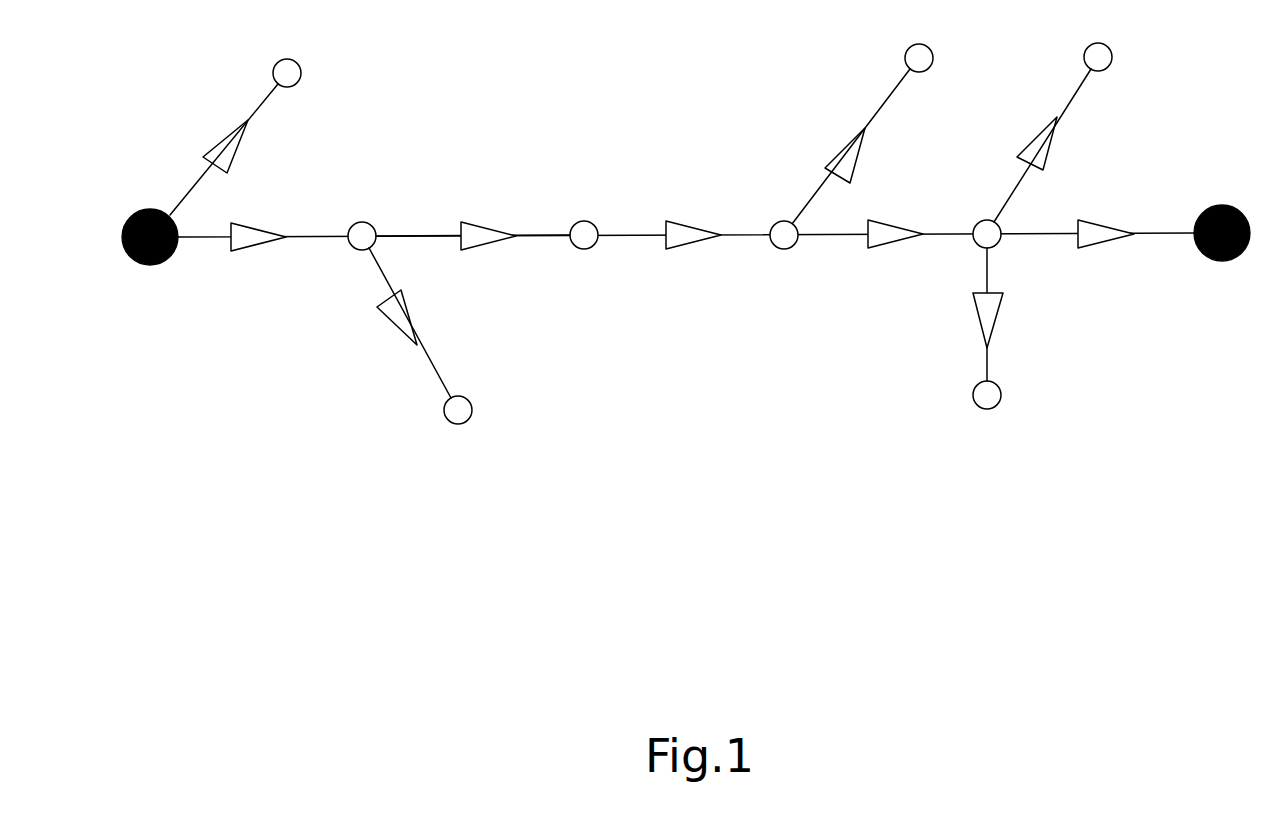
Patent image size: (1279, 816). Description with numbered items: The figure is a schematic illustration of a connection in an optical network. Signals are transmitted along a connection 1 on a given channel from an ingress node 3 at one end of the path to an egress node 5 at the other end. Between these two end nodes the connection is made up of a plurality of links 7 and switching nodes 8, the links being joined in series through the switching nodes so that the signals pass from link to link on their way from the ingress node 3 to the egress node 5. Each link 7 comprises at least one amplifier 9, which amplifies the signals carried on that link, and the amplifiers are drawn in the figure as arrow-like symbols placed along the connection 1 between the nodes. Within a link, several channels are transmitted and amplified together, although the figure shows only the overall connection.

The connection 1 is at (1195, 183).
The ingress node 3 is at (155, 265).
The egress node 5 is at (1217, 262).
The link 7 is at (368, 262).
The switching node 8 is at (787, 250).
The amplifier 9 is at (463, 227).